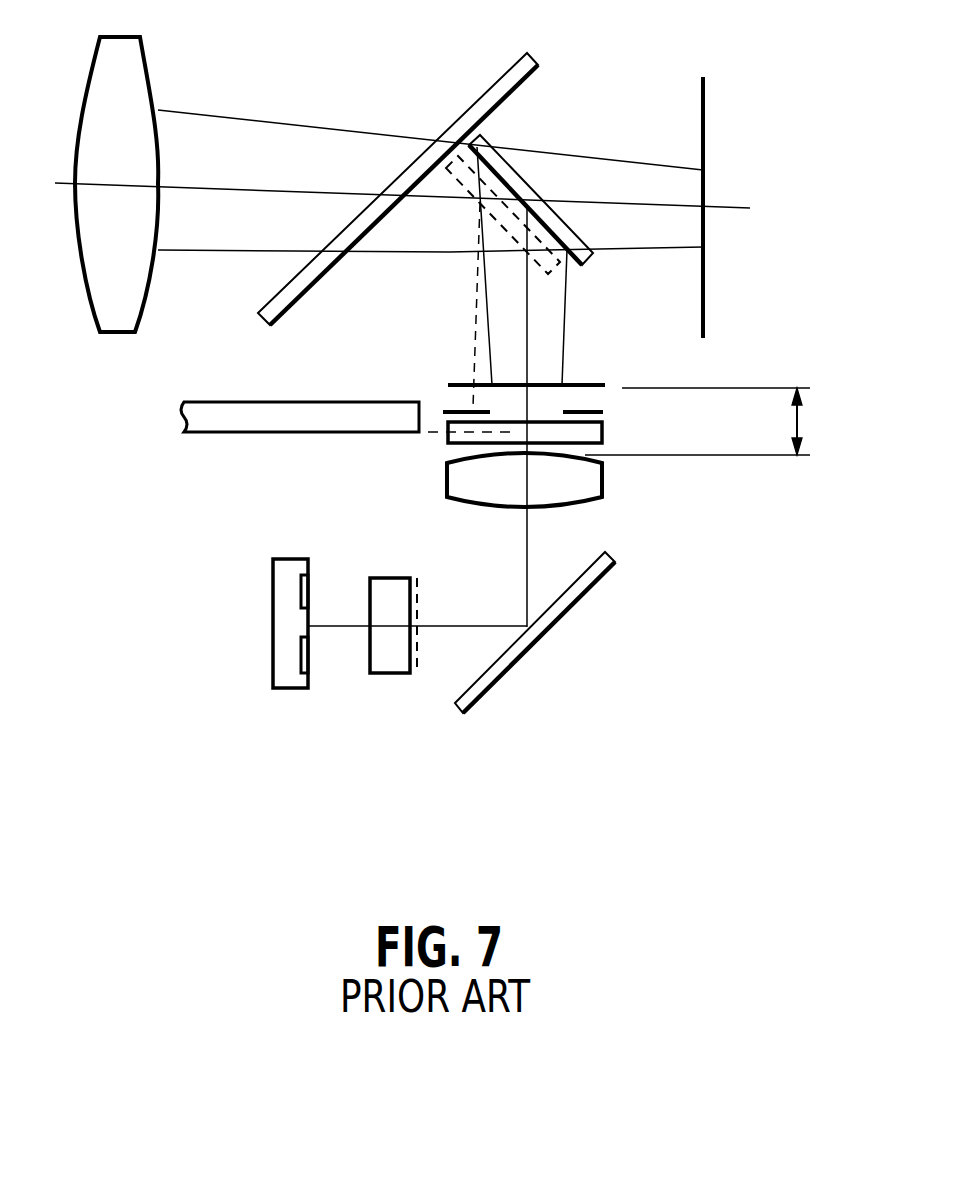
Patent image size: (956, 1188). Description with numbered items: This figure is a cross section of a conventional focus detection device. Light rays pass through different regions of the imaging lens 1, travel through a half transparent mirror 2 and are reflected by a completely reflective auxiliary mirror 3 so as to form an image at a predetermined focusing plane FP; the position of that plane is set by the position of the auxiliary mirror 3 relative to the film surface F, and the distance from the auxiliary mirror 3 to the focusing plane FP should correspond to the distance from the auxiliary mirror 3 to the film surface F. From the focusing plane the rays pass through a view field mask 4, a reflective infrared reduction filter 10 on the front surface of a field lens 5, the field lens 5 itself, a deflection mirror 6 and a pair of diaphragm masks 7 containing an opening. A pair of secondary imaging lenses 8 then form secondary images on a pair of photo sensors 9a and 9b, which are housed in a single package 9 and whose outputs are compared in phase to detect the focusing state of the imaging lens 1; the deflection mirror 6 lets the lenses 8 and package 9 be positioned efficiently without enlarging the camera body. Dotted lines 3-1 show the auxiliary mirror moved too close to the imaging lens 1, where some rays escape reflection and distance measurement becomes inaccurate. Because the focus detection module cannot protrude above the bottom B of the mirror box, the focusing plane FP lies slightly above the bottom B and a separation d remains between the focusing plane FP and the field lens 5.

The imaging lens 1 is at (152, 76).
The half transparent mirror 2 is at (486, 90).
The auxiliary mirror 3 is at (523, 180).
The auxiliary mirror moved too close to imaging lens 3-1 is at (560, 283).
The view field mask 4 is at (602, 412).
The field lens 5 is at (602, 490).
The deflection mirror 6 is at (595, 583).
The diaphragm masks 7 is at (418, 662).
The secondary imaging lenses 8 is at (380, 673).
The photo sensor package 9 is at (278, 670).
The photo sensor 9a is at (308, 590).
The photo sensor 9b is at (308, 660).
The reflective infrared reduction filter 10 is at (603, 434).
The film surface F is at (703, 100).
The predetermined focusing plane FP is at (590, 384).
The bottom of the mirror box B is at (313, 408).
The separation d is at (708, 421).